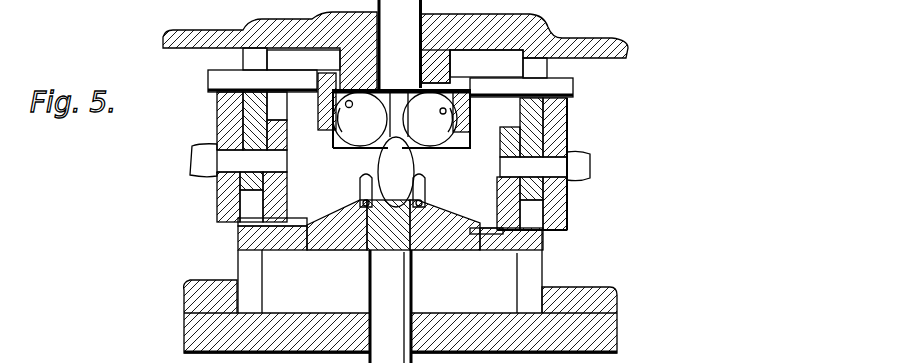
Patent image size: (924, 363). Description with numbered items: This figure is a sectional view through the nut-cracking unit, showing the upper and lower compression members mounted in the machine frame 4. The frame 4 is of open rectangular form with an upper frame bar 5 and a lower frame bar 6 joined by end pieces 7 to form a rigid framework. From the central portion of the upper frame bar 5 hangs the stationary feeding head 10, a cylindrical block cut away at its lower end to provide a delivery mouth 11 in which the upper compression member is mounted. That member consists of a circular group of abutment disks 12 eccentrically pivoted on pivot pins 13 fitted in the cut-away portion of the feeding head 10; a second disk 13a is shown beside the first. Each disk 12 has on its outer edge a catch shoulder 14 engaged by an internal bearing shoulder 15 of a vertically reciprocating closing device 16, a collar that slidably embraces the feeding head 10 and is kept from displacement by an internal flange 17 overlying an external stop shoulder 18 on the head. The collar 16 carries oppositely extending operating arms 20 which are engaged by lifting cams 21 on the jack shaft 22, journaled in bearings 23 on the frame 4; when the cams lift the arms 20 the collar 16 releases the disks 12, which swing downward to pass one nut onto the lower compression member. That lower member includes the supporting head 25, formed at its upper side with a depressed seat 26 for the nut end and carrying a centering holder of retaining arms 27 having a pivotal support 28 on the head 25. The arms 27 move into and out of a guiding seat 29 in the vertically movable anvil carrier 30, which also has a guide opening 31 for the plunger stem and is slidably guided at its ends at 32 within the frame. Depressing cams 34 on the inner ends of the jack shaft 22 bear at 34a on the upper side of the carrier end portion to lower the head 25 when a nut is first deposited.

The machine frame 4 is at (530, 133).
The upper frame bar 5 is at (292, 28).
The lower frame bar 6 is at (294, 312).
The end pieces 7 is at (233, 178).
The stationary feeding head 10 is at (486, 90).
The delivery mouth 11 is at (397, 92).
The abutment disks 12 is at (352, 140).
The pivot pins 13 is at (352, 106).
The roller 13a is at (430, 119).
The catch shoulder 14 is at (322, 96).
The internal bearing shoulder 15 is at (466, 128).
The closing device 16 is at (458, 95).
The internal flange 17 is at (340, 72).
The external stop shoulder 18 is at (486, 64).
The operating arms 20 is at (604, 91).
The lifting cams 21 is at (225, 126).
The jack shaft 22 is at (208, 162).
The bearings 23 is at (567, 215).
The supporting head 25 is at (368, 256).
The depressed seat 26 is at (386, 212).
The retaining arms 27 is at (361, 193).
The pivotal support 28 is at (433, 236).
The guiding seat 29 is at (343, 224).
The anvil carrier 30 is at (502, 252).
The guide opening 31 is at (412, 252).
The slide guides 32 is at (250, 262).
The depressing cams 34 is at (235, 203).
The bearing engagement 34a is at (243, 236).